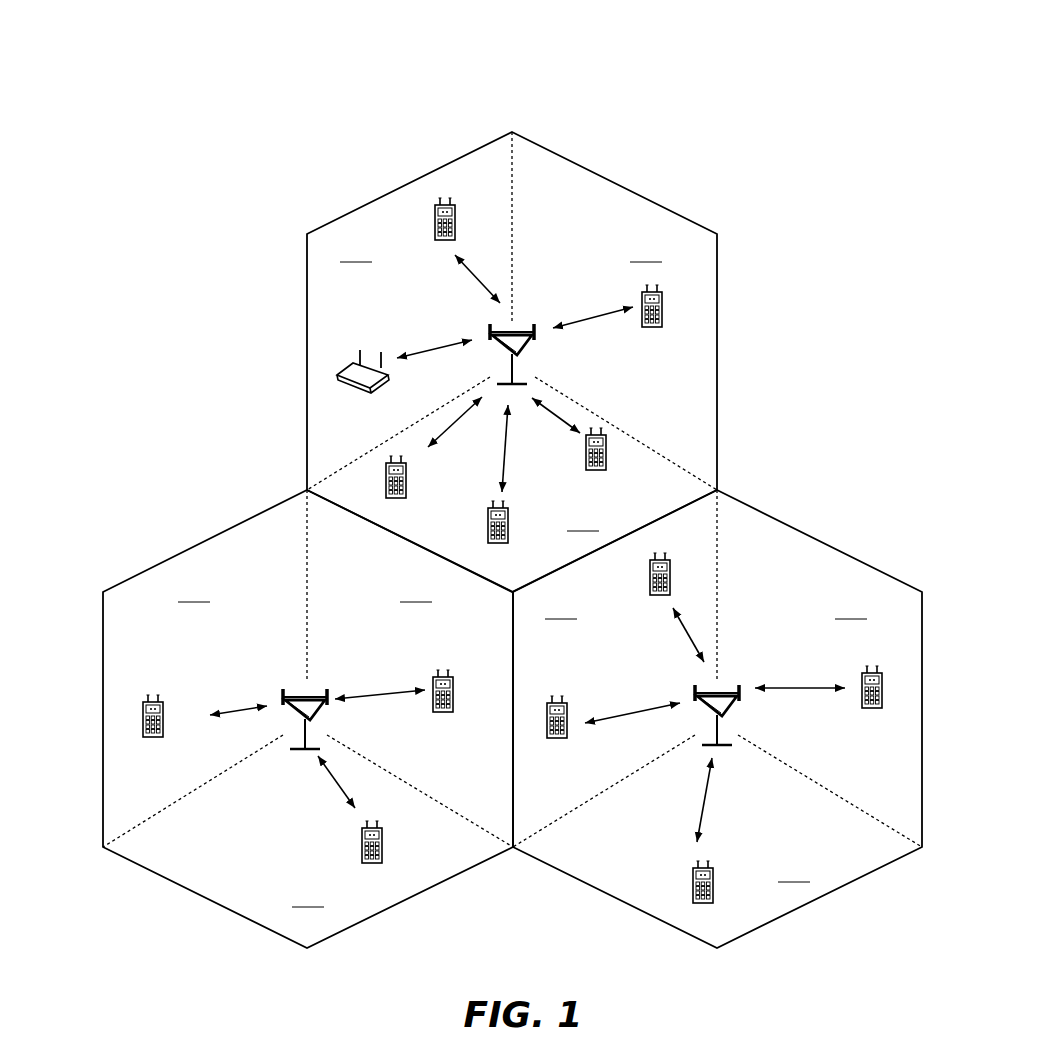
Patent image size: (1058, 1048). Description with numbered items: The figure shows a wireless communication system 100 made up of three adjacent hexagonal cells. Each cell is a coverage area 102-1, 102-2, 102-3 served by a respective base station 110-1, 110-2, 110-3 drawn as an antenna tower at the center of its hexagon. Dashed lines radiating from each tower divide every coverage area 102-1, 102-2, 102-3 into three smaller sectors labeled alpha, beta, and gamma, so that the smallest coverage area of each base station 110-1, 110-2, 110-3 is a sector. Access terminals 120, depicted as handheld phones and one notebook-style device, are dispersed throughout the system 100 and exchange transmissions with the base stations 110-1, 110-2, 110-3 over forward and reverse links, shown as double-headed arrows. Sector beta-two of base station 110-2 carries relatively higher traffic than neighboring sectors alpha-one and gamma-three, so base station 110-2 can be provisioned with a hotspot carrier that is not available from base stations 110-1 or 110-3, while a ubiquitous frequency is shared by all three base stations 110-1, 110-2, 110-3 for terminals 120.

The wireless communication system 100 is at (790, 54).
The coverage area 102-1 is at (204, 540).
The coverage area 102-2 is at (617, 184).
The coverage area 102-3 is at (820, 540).
The base station 110-1 is at (314, 697).
The base station 110-2 is at (521, 330).
The base station 110-3 is at (717, 690).
The access terminal 120 is at (523, 550).